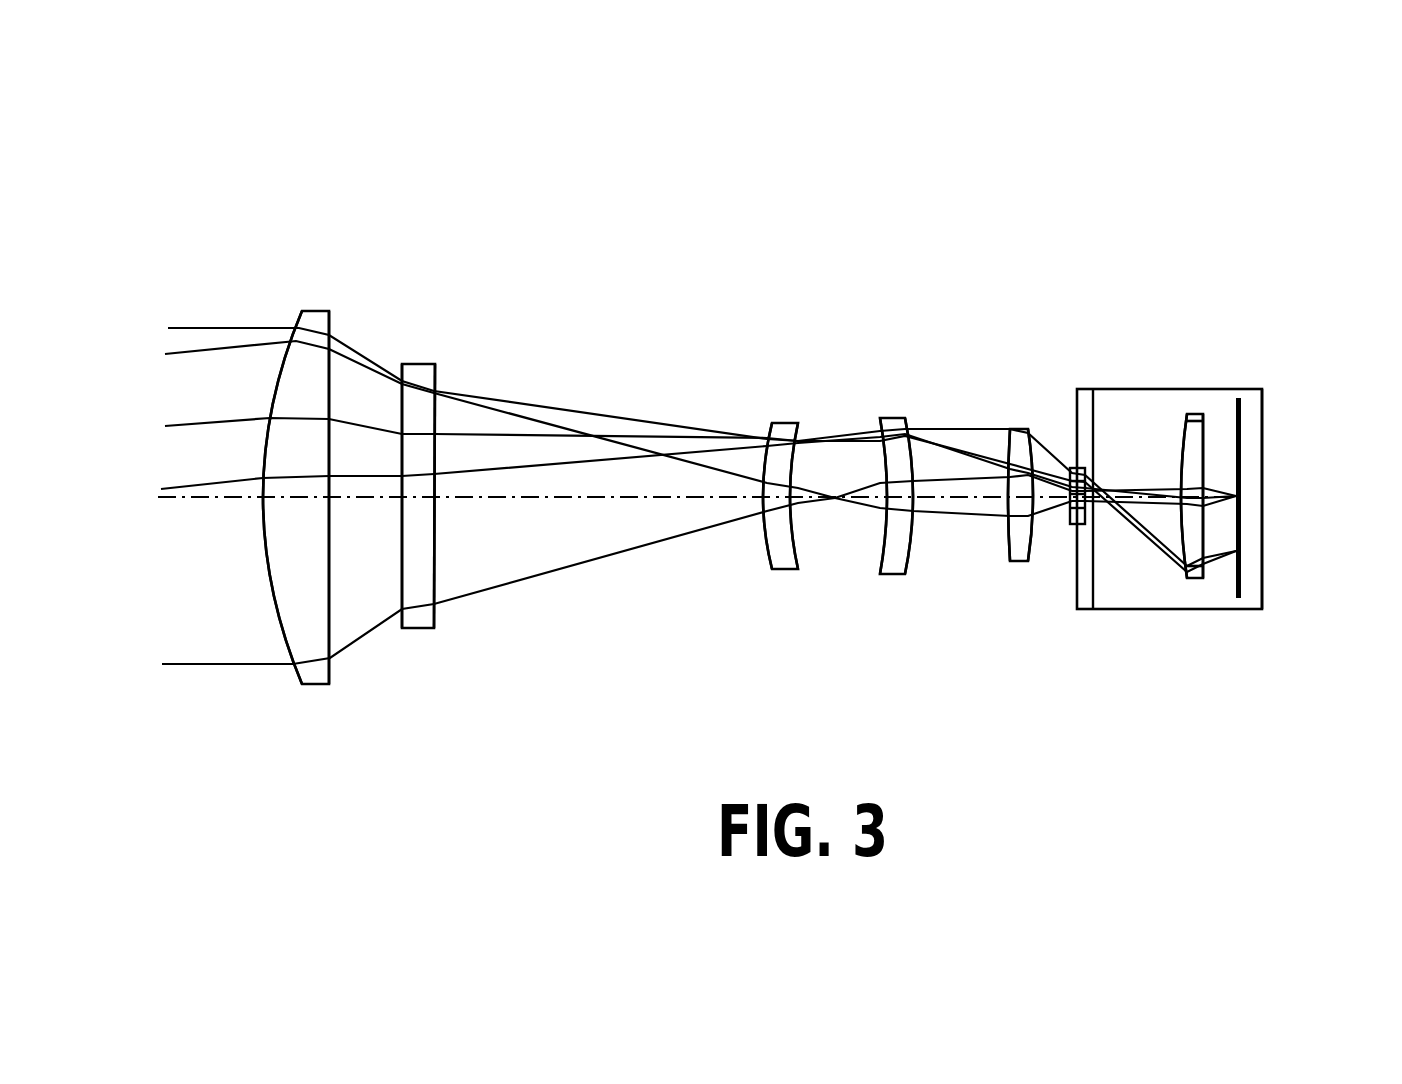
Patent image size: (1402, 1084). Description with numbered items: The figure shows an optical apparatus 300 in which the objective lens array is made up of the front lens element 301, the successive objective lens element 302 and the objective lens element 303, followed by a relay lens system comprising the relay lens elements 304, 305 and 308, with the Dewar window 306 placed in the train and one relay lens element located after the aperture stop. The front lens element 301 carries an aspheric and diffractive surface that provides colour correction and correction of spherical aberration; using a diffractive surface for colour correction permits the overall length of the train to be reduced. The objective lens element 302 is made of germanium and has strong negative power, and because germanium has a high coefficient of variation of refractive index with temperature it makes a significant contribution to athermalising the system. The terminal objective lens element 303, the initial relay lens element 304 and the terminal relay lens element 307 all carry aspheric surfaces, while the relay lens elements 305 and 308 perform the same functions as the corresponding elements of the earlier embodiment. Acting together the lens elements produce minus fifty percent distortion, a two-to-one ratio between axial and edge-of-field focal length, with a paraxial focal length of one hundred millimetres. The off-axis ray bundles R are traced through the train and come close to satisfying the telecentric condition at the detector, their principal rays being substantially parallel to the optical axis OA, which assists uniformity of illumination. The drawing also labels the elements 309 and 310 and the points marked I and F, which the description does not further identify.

The optical apparatus 300 is at (648, 278).
The front lens element 301 is at (315, 310).
The objective lens element 302 is at (418, 363).
The terminal objective lens element 303 is at (788, 422).
The initial relay lens element 304 is at (890, 417).
The relay lens element 305 is at (1022, 428).
The Dewar window 306 is at (1084, 467).
The terminal relay lens element 307 is at (1088, 570).
The relay lens element 308 is at (1195, 413).
The window / filter 309 is at (1241, 430).
The detector 310 is at (1265, 555).
The optical axis OA is at (173, 499).
The off-axis ray bundles R is at (173, 663).
The intermediate image I is at (835, 528).
The focal plane F is at (1222, 590).